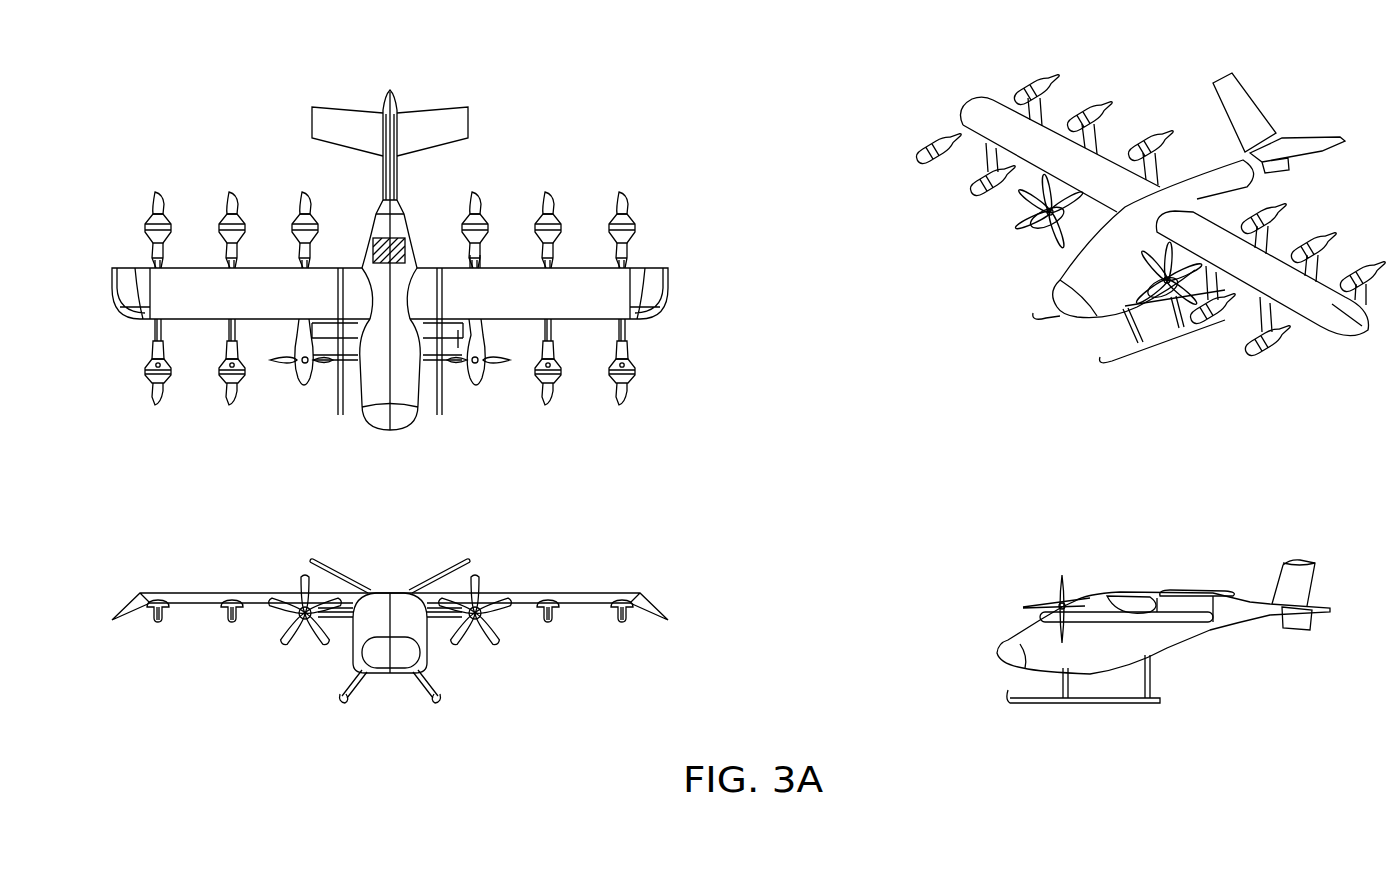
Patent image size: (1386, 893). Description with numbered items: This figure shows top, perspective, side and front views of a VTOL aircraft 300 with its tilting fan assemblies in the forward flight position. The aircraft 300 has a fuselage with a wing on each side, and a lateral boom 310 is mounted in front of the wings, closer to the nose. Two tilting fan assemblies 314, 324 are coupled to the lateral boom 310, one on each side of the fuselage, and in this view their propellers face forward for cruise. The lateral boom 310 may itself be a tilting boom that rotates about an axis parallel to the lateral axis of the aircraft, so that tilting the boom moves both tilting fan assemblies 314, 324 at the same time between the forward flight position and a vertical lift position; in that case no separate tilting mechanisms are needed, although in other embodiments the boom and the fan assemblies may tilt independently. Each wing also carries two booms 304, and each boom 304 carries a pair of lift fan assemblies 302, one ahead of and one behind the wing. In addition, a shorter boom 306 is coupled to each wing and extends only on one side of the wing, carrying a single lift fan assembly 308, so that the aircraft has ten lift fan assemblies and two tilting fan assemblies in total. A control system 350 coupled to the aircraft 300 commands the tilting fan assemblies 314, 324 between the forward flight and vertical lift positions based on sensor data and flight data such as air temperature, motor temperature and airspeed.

The VTOL aircraft 300 is at (578, 60).
The lift fan assembly 302 is at (630, 218).
The boom 304 is at (628, 327).
The shorter boom 306 is at (490, 253).
The lift fan assembly 308 is at (484, 200).
The lateral boom 310 is at (458, 345).
The tilting fan assembly 314 is at (478, 383).
The tilting fan assembly 324 is at (303, 383).
The control system 350 is at (380, 236).